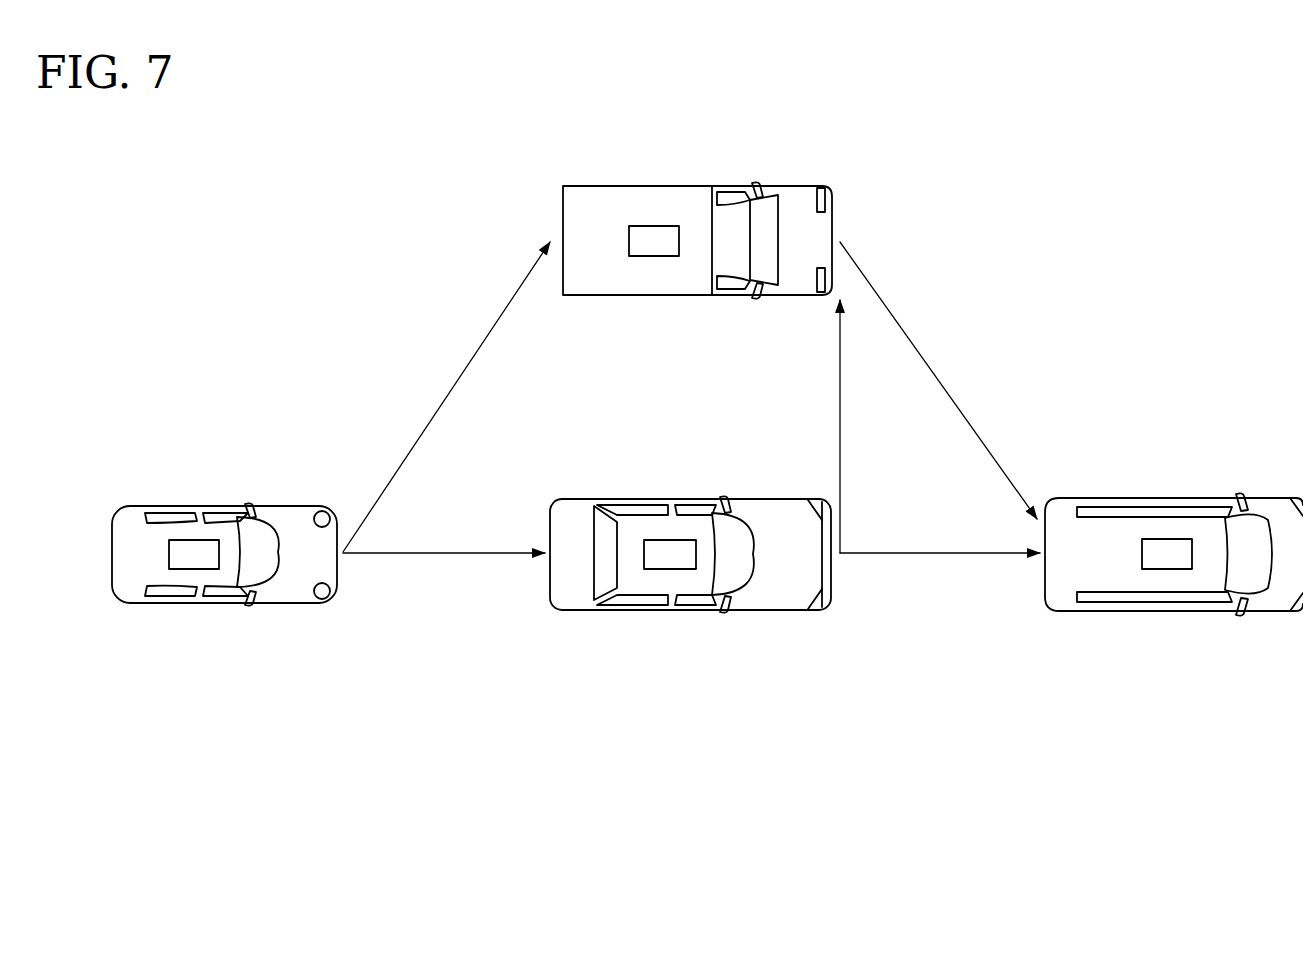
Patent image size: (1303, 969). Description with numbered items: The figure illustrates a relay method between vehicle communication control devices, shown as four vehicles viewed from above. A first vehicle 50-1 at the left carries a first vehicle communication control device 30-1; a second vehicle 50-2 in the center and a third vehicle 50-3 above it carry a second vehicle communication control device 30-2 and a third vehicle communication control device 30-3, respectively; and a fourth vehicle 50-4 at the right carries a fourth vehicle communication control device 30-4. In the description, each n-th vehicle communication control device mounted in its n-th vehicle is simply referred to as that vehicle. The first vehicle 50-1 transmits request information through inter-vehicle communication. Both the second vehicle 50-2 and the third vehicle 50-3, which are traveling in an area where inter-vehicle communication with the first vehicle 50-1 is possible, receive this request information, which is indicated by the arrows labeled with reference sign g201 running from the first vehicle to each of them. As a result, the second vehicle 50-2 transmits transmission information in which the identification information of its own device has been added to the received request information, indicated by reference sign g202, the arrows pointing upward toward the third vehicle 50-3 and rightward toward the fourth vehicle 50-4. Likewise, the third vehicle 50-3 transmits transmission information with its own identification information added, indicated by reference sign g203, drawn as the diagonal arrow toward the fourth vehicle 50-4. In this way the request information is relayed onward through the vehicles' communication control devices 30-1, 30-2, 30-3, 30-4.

The first vehicle 50-1 is at (220, 506).
The second vehicle 50-2 is at (688, 499).
The third vehicle 50-3 is at (695, 186).
The fourth vehicle 50-4 is at (1177, 498).
The first vehicle communication control device 30-1 is at (186, 570).
The second vehicle communication control device 30-2 is at (657, 570).
The third vehicle communication control device 30-3 is at (654, 257).
The fourth vehicle communication control device 30-4 is at (1163, 570).
The request information reception g201 is at (455, 383).
The transmission information from second vehicle g202 is at (838, 385).
The transmission information from third vehicle g203 is at (932, 365).